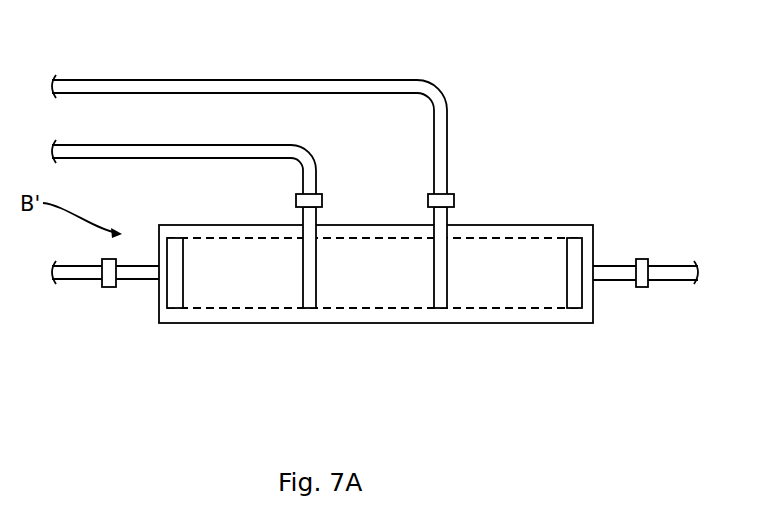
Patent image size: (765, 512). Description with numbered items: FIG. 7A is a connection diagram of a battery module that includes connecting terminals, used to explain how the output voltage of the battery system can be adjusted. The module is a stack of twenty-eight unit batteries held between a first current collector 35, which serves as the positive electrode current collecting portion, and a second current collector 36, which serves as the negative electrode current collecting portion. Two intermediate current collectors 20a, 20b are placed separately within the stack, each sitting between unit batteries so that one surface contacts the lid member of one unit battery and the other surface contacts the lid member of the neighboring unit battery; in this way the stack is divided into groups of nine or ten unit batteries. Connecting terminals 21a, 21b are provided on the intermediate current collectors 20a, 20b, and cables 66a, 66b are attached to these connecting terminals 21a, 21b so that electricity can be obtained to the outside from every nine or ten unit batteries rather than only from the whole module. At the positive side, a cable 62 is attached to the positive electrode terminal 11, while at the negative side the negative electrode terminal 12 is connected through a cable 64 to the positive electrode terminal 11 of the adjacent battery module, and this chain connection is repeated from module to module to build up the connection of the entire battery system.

The cable 66b is at (175, 80).
The cable 66a is at (242, 146).
The connecting terminal 21a is at (323, 200).
The connecting terminal 21b is at (454, 199).
The intermediate current collector 20a is at (313, 312).
The intermediate current collector 20b is at (443, 312).
The first current collector 35 is at (176, 238).
The second current collector 36 is at (575, 240).
The cable 62 is at (78, 278).
The cable 64 is at (670, 268).
The positive electrode terminal 11 is at (108, 290).
The negative electrode terminal 12 is at (640, 289).